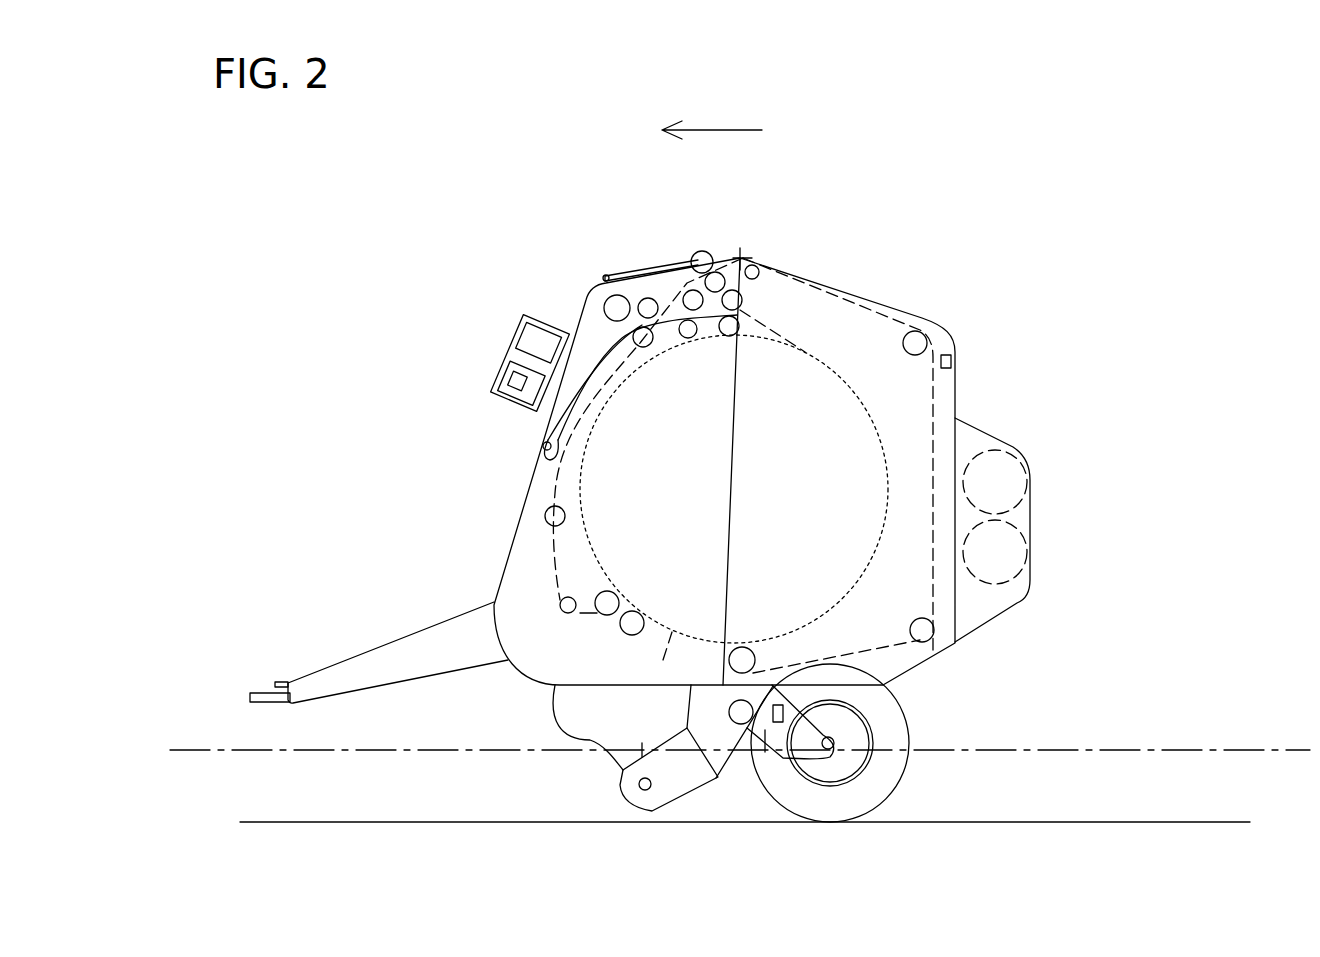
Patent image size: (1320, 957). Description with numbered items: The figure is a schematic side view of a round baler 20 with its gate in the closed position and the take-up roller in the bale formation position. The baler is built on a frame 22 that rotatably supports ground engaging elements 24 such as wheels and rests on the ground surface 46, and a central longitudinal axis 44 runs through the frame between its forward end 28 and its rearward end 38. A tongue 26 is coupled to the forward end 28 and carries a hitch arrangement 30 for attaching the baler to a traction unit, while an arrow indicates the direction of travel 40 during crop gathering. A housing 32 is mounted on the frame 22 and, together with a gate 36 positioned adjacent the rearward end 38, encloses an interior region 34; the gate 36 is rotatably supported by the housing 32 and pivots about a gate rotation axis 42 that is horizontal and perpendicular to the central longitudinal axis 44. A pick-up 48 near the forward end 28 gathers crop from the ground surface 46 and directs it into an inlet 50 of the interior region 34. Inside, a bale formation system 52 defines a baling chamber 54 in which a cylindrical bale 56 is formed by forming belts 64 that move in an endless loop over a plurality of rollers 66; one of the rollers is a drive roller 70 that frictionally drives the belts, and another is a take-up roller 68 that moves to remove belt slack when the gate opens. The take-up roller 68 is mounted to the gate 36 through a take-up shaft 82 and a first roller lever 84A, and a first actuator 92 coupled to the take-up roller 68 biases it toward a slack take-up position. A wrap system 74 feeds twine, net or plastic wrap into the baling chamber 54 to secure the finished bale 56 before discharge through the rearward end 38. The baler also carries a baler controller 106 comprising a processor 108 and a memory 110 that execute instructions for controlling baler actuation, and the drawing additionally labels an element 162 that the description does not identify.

The round baler 20 is at (908, 143).
The frame 22 is at (760, 760).
The ground engaging elements 24 is at (877, 783).
The tongue 26 is at (363, 651).
The forward end 28 is at (495, 550).
The hitch arrangement 30 is at (263, 690).
The housing 32 is at (513, 493).
The interior region 34 is at (856, 363).
The gate 36 is at (957, 385).
The rearward end 38 is at (1033, 575).
The direction of travel 40 is at (722, 130).
The gate rotation axis 42 is at (743, 253).
The central longitudinal axis 44 is at (195, 753).
The ground surface 46 is at (1060, 826).
The pick-up 48 is at (618, 790).
The inlet 50 is at (611, 713).
The bale formation system 52 is at (533, 487).
The baling chamber 54 is at (776, 512).
The bale 56 is at (663, 660).
The forming belts 64 is at (880, 297).
The rollers 66 is at (920, 340).
The take-up roller 68 is at (705, 257).
The drive roller 70 is at (605, 607).
The wrap system 74 is at (1032, 520).
The take-up shaft 82 is at (605, 273).
The first roller lever 84A is at (643, 272).
The first actuator 92 is at (615, 347).
The baler controller 106 is at (525, 357).
The processor 108 is at (537, 340).
The memory 110 is at (522, 385).
The sensor element 162 is at (520, 388).